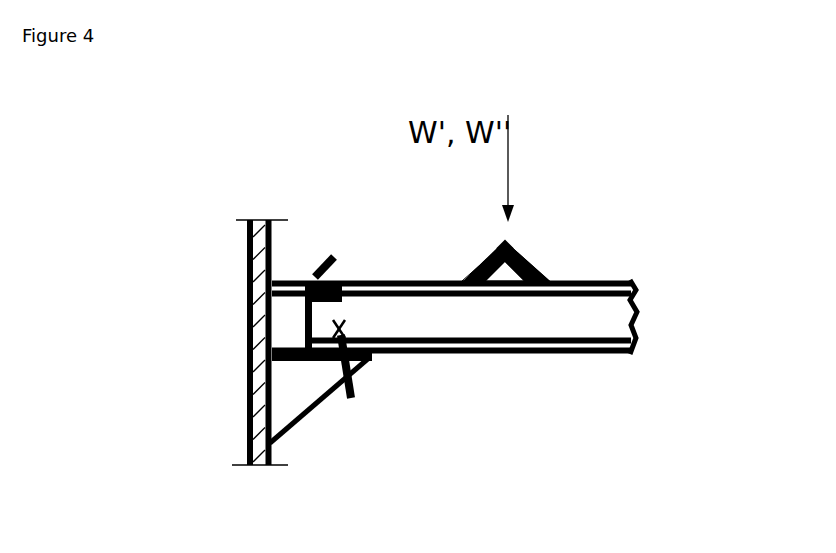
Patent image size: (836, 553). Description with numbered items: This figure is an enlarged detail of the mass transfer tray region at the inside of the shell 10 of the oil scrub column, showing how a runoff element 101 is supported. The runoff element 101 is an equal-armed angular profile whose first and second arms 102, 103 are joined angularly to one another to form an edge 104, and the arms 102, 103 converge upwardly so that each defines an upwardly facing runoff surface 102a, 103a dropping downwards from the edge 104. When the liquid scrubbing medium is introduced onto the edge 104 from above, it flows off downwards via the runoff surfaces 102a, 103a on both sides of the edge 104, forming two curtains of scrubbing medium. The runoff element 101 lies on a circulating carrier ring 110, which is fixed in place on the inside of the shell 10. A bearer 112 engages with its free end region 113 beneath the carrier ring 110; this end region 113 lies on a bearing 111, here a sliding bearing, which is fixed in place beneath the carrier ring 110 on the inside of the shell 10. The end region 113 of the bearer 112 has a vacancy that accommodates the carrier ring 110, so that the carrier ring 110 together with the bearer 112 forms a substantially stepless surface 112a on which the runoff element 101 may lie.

The shell 10 is at (250, 330).
The runoff element 101 is at (545, 235).
The first arm 102 is at (483, 278).
The runoff surface 102a is at (485, 254).
The second arm 103 is at (532, 280).
The runoff surface 103a is at (528, 248).
The edge 104 is at (507, 241).
The carrier ring 110 is at (338, 255).
The bearing 111 is at (349, 400).
The bearer 112 is at (600, 313).
The stepless surface 112a is at (487, 255).
The end region 113 is at (338, 312).